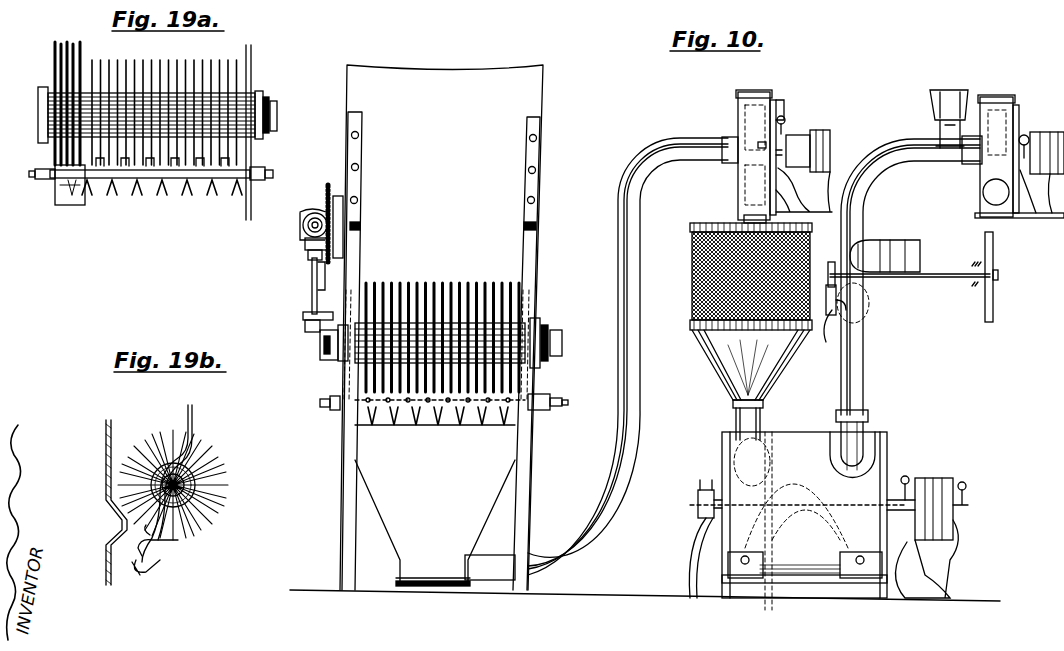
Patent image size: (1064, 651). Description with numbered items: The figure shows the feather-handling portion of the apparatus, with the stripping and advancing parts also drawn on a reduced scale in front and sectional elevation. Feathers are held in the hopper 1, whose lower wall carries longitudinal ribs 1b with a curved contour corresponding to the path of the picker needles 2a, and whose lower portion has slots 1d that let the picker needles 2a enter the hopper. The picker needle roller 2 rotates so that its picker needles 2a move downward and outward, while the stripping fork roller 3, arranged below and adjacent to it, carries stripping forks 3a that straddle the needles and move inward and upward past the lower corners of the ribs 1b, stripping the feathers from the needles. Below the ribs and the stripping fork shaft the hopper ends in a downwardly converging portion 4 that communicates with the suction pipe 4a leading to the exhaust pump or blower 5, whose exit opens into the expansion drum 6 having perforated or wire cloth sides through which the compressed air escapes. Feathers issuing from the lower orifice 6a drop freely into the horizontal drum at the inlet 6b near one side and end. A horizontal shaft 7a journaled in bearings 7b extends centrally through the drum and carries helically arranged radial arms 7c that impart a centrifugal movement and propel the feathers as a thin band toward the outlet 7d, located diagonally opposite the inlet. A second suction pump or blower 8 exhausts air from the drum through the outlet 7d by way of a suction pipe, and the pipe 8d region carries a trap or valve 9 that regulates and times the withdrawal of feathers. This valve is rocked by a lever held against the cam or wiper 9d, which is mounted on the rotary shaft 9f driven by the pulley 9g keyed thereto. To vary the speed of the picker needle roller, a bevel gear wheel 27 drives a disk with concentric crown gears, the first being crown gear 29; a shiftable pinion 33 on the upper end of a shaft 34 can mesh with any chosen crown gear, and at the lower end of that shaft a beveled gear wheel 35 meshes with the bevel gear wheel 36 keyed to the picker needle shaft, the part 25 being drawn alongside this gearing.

In FIG. 19A, the hopper 1 is at (80, 68).
In FIG. 10, the hopper 1 is at (505, 162).
In FIG. 19B, the longitudinal ribs 1b is at (118, 432).
In FIG. 19A, the slots 1d is at (248, 82).
In FIG. 19B, the slots 1d is at (195, 446).
In FIG. 19A, the picker needle roller 2 is at (157, 115).
In FIG. 19B, the picker needle roller 2 is at (218, 488).
In FIG. 10, the picker needle roller 2 is at (540, 322).
In FIG. 10, the picker needles 2a is at (460, 288).
In FIG. 19A, the stripping fork roller 3 is at (182, 188).
In FIG. 19B, the stripping fork roller 3 is at (180, 540).
In FIG. 10, the stripping fork roller 3 is at (406, 410).
In FIG. 19A, the stripping forks 3a is at (220, 190).
In FIG. 19B, the stripping forks 3a is at (158, 566).
In FIG. 10, the stripping forks 3a is at (580, 385).
In FIG. 10, the downwardly converging portion 4 is at (470, 522).
In FIG. 10, the suction pipe 4a is at (641, 356).
In FIG. 10, the exhaust pump or blower 5 is at (736, 118).
In FIG. 10, the expansion drum 6 is at (700, 278).
In FIG. 10, the lower orifice 6a is at (733, 410).
In FIG. 10, the inlet 6b is at (736, 452).
In FIG. 10, the horizontal shaft 7a is at (698, 497).
In FIG. 10, the bearings 7b is at (706, 515).
In FIG. 10, the radial arms 7c is at (768, 527).
In FIG. 10, the outlet 7d is at (866, 428).
In FIG. 10, the second suction pump or blower 8 is at (1012, 110).
In FIG. 10, the return pipe 8d is at (866, 352).
In FIG. 10, the trap or valve 9 is at (862, 300).
In FIG. 10, the cam or wiper 9d is at (842, 318).
In FIG. 10, the rotary shaft 9f is at (957, 280).
In FIG. 10, the pulley 9g is at (995, 252).
In FIG. 10, the pinion 25 is at (303, 224).
In FIG. 10, the bevel gear wheel 27 is at (306, 212).
In FIG. 10, the crown gear 29 is at (326, 190).
In FIG. 10, the pinion or gear wheel 33 is at (306, 244).
In FIG. 10, the shaft 34 is at (312, 297).
In FIG. 10, the beveled gear wheel 35 is at (305, 329).
In FIG. 10, the bevel gear wheel 36 is at (320, 350).